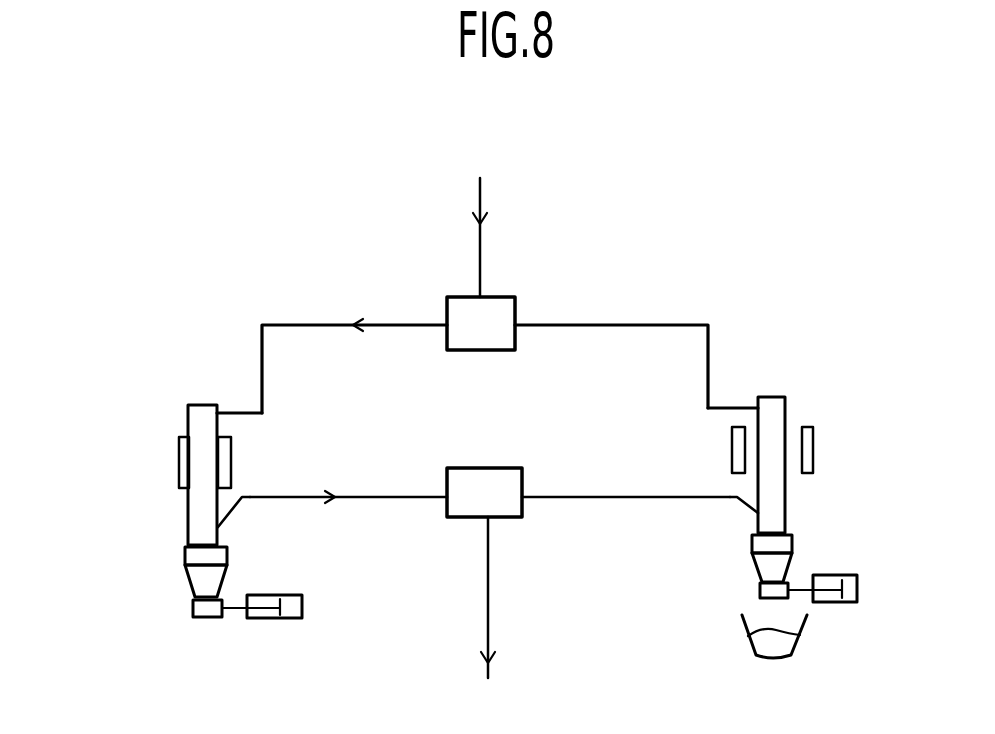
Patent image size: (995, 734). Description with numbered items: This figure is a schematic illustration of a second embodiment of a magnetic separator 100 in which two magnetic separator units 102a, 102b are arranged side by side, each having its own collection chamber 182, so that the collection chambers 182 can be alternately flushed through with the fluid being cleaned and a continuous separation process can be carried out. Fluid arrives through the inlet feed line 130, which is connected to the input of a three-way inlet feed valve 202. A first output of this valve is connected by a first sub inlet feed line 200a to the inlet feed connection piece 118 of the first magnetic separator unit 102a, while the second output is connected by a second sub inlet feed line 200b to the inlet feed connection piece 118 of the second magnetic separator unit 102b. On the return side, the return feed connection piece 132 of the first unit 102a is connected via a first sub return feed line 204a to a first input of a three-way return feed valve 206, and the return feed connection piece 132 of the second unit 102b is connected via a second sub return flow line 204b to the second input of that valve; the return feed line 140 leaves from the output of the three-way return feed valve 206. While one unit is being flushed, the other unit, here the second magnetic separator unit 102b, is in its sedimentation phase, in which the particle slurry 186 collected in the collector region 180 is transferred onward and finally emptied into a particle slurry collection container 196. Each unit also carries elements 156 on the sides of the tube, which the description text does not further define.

The magnetic separator 100 is at (243, 265).
The first magnetic separator unit 102a is at (163, 402).
The second magnetic separator unit 102b is at (795, 368).
The inlet feed connection piece 118 is at (228, 410).
The inlet feed line 130 is at (481, 203).
The return feed connection piece 132 is at (243, 505).
The return feed line 140 is at (488, 597).
The pumping elements 156 is at (185, 468).
The collector region 180 is at (203, 443).
The collection chamber 182 is at (176, 511).
The particle slurry 186 is at (778, 642).
The particle slurry collection container 196 is at (790, 658).
The first sub inlet feed line 200a is at (320, 325).
The second sub inlet feed line 200b is at (622, 325).
The three-way inlet feed valve 202 is at (487, 313).
The first sub return feed line 204a is at (395, 499).
The second sub return flow line 204b is at (593, 499).
The three-way return feed valve 206 is at (508, 503).